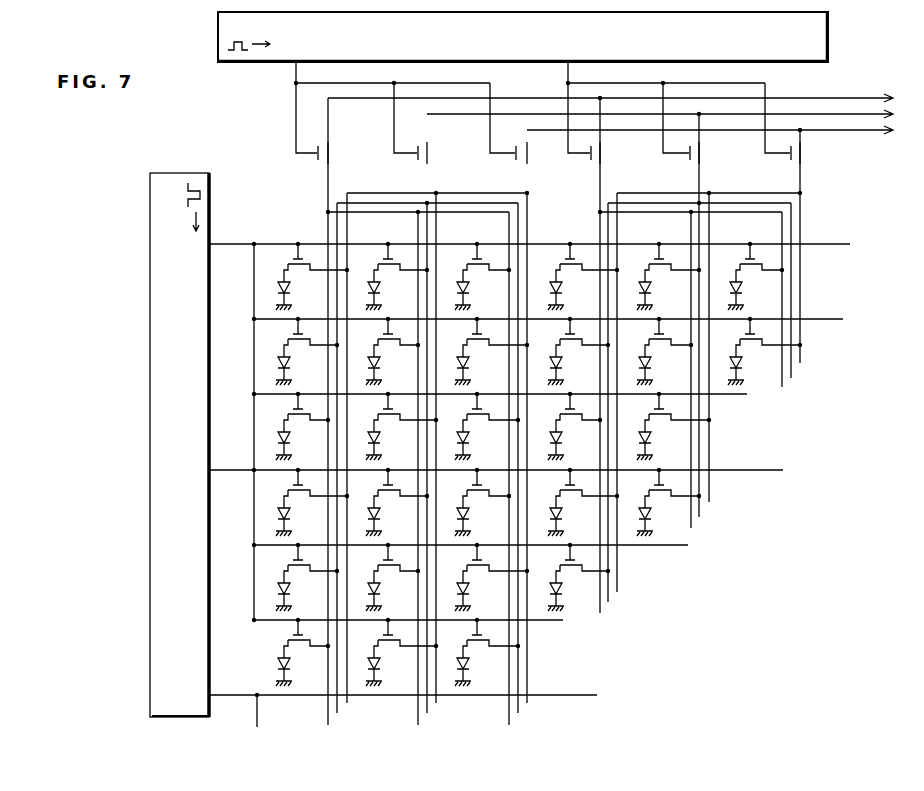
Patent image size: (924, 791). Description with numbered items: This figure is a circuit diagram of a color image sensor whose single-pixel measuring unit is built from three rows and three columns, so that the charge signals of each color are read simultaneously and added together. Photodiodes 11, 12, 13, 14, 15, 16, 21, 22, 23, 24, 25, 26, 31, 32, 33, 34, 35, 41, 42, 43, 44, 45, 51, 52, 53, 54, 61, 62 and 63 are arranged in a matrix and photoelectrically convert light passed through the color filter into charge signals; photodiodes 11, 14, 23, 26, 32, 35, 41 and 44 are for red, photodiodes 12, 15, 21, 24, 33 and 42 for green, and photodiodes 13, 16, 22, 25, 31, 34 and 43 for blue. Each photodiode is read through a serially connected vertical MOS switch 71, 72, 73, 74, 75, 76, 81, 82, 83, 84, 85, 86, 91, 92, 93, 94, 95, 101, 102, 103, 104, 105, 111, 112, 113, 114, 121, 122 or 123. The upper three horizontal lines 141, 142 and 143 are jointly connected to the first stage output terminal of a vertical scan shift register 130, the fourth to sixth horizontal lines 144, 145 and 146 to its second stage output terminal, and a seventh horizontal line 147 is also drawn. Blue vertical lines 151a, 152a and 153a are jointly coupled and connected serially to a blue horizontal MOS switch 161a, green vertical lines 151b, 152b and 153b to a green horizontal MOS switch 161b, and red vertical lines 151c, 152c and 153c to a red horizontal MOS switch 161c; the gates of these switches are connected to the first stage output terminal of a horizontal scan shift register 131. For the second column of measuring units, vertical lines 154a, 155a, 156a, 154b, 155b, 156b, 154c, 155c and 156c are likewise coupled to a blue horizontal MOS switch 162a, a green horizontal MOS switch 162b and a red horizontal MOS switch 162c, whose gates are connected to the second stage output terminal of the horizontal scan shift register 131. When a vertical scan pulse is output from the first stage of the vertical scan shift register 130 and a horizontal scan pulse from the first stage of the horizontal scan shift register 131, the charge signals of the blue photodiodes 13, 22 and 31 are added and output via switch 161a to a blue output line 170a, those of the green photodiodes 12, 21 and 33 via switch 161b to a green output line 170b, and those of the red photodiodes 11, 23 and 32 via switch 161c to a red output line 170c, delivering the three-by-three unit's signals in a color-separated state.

The photodiode 11 is at (288, 288).
The photodiode 12 is at (378, 288).
The photodiode 13 is at (467, 288).
The photodiode 14 is at (560, 288).
The photodiode 15 is at (649, 288).
The photodiode 16 is at (740, 288).
The photodiode 21 is at (288, 363).
The photodiode 22 is at (378, 363).
The photodiode 23 is at (467, 363).
The photodiode 24 is at (560, 363).
The photodiode 25 is at (649, 363).
The photodiode 26 is at (740, 363).
The photodiode 31 is at (288, 438).
The photodiode 32 is at (378, 438).
The photodiode 33 is at (467, 438).
The photodiode 34 is at (560, 438).
The photodiode 35 is at (649, 438).
The photodiode 41 is at (288, 514).
The photodiode 42 is at (378, 514).
The photodiode 43 is at (467, 514).
The photodiode 44 is at (560, 514).
The photodiode 45 is at (649, 514).
The photodiode 51 is at (288, 589).
The photodiode 52 is at (378, 589).
The photodiode 53 is at (467, 589).
The photodiode 54 is at (560, 589).
The photodiode 61 is at (277, 664).
The photodiode 62 is at (378, 664).
The photodiode 63 is at (467, 664).
The vertical MOS switch 71 is at (290, 261).
The vertical MOS switch 72 is at (380, 261).
The vertical MOS switch 73 is at (469, 261).
The vertical MOS switch 74 is at (562, 261).
The vertical MOS switch 75 is at (651, 261).
The vertical MOS switch 76 is at (742, 261).
The vertical MOS switch 81 is at (290, 336).
The vertical MOS switch 82 is at (380, 336).
The vertical MOS switch 83 is at (469, 336).
The vertical MOS switch 84 is at (562, 336).
The vertical MOS switch 85 is at (651, 336).
The vertical MOS switch 86 is at (742, 336).
The vertical MOS switch 91 is at (290, 411).
The vertical MOS switch 92 is at (380, 411).
The vertical MOS switch 93 is at (469, 411).
The vertical MOS switch 94 is at (562, 411).
The vertical MOS switch 95 is at (651, 411).
The vertical MOS switch 101 is at (293, 487).
The vertical MOS switch 102 is at (383, 487).
The vertical MOS switch 103 is at (472, 487).
The vertical MOS switch 104 is at (565, 487).
The vertical MOS switch 105 is at (654, 487).
The switching transistor 111 is at (293, 562).
The switching transistor 112 is at (383, 562).
The switching transistor 113 is at (472, 562).
The switching transistor 114 is at (565, 562).
The switching transistor 121 is at (293, 637).
The switching transistor 122 is at (383, 637).
The switching transistor 123 is at (472, 637).
The vertical scan shift register 130 is at (150, 584).
The horizontal scan shift register 131 is at (829, 37).
The horizontal line 141 is at (850, 245).
The horizontal line 142 is at (843, 320).
The horizontal line 143 is at (747, 395).
The horizontal line 144 is at (783, 471).
The horizontal line 145 is at (688, 546).
The horizontal line 146 is at (563, 621).
The horizontal scanning line 147 is at (597, 696).
The blue vertical line 151a is at (330, 710).
The green vertical line 151b is at (345, 720).
The red vertical line 151c is at (343, 707).
The blue vertical line 152a is at (418, 725).
The green vertical line 152b is at (429, 713).
The red vertical line 152c is at (438, 705).
The blue vertical line 153a is at (509, 725).
The green vertical line 153b is at (520, 713).
The red vertical line 153c is at (529, 705).
The vertical signal line 154a is at (601, 614).
The vertical signal line 154b is at (609, 603).
The vertical signal line 154c is at (618, 593).
The vertical signal line 155a is at (692, 530).
The vertical signal line 155b is at (700, 518).
The vertical signal line 155c is at (710, 503).
The vertical signal line 156a is at (783, 388).
The vertical signal line 156b is at (792, 379).
The vertical signal line 156c is at (801, 364).
The blue horizontal MOS switch 161a is at (317, 164).
The green horizontal MOS switch 161b is at (419, 162).
The red horizontal MOS switch 161c is at (517, 162).
The blue horizontal MOS switch 162a is at (592, 162).
The green horizontal MOS switch 162b is at (690, 162).
The red horizontal MOS switch 162c is at (791, 162).
The blue output line 170a is at (850, 97).
The green output line 170b is at (838, 114).
The red output line 170c is at (878, 130).